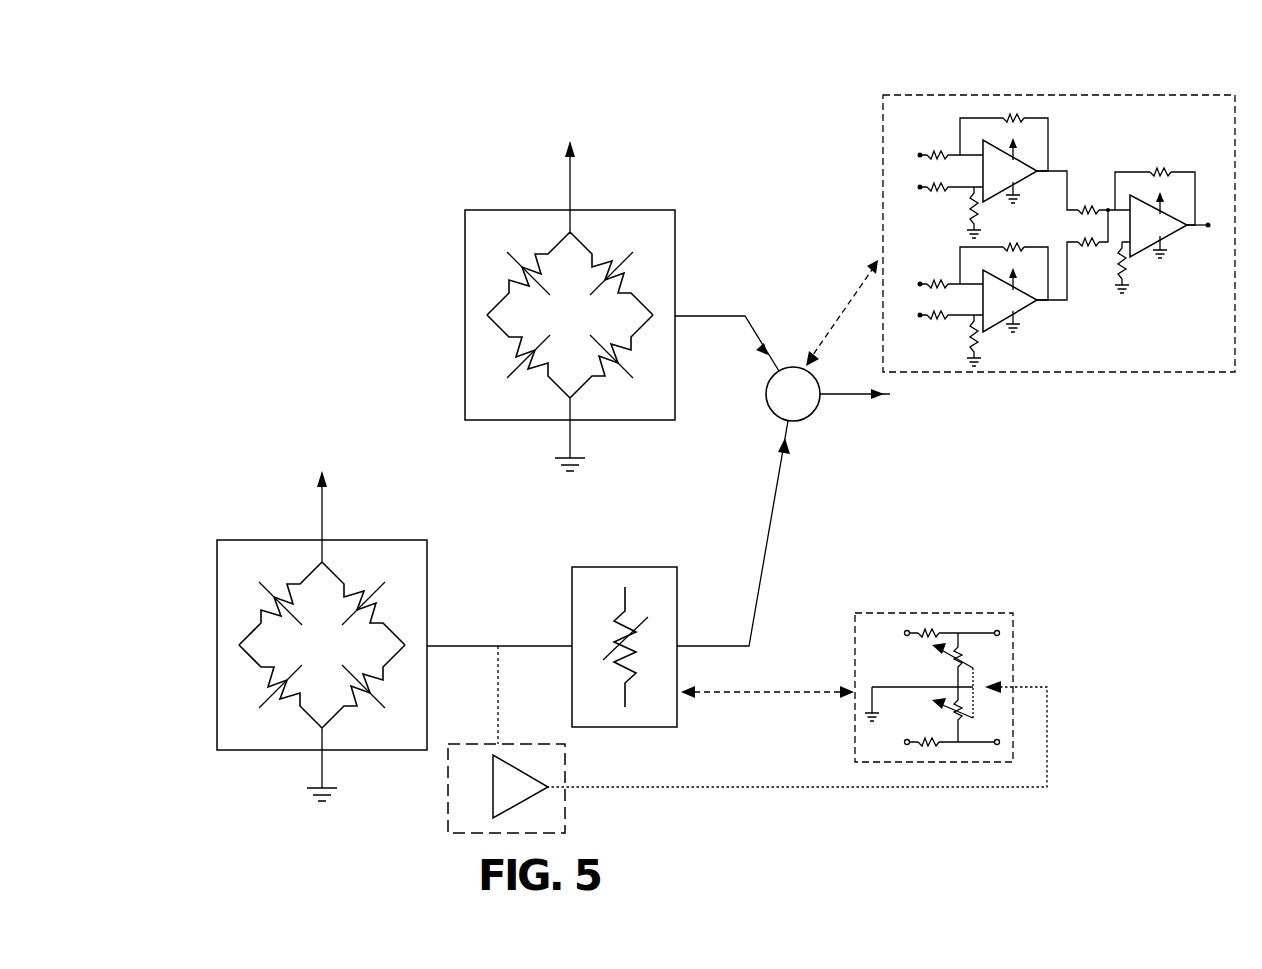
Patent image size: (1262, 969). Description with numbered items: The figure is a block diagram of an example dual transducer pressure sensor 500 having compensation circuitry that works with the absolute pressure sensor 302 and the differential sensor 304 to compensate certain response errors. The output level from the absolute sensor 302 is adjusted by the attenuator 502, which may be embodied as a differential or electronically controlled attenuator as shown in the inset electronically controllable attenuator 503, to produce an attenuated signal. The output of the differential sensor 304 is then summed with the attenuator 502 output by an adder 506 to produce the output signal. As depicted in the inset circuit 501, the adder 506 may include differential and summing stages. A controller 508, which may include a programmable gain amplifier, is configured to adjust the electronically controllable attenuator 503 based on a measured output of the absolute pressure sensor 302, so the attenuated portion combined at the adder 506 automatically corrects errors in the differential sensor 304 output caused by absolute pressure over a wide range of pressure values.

The dual transducer pressure sensor 500 is at (517, 70).
The absolute pressure sensor 302 is at (296, 623).
The differential sensor 304 is at (538, 294).
The attenuator 502 is at (709, 574).
The adder 506 is at (812, 412).
The inset circuit 501 is at (1059, 233).
The electronically controllable attenuator 503 is at (797, 700).
The controller 508 is at (506, 739).